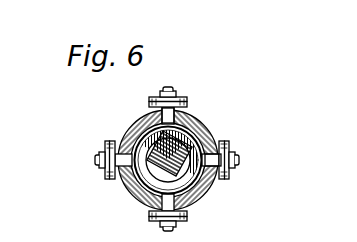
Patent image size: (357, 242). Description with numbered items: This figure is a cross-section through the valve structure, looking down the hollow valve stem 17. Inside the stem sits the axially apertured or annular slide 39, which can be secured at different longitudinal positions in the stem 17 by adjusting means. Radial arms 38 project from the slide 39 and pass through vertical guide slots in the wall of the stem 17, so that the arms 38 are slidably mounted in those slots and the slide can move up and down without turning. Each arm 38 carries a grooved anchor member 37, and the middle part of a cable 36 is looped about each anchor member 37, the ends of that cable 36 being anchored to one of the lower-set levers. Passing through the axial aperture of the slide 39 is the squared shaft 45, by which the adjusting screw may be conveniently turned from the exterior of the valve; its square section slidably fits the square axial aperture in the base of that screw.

The hollow valve stem 17 is at (136, 118).
The cable 36 is at (188, 106).
The grooved anchor member 37 is at (182, 98).
The radial arm 38 is at (219, 179).
The annular slide 39 is at (190, 130).
The squared shaft 45 is at (131, 189).